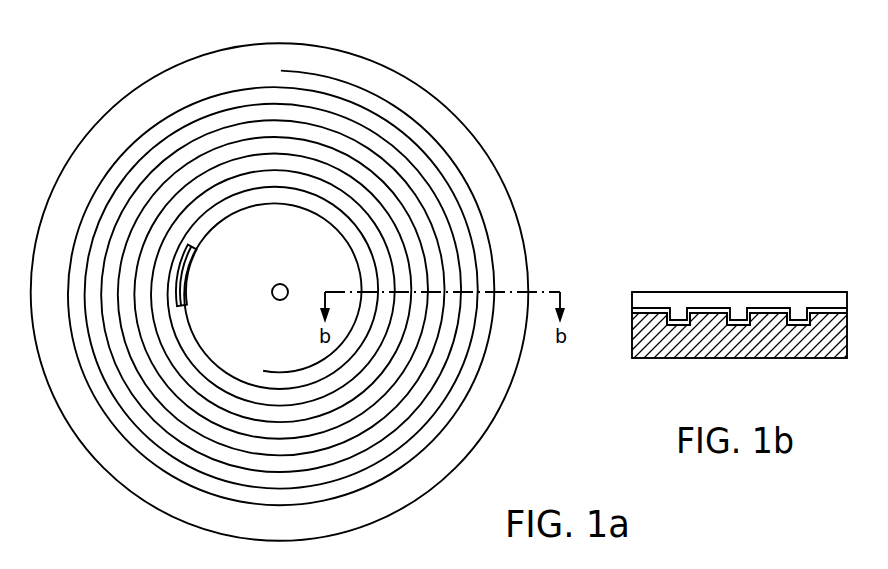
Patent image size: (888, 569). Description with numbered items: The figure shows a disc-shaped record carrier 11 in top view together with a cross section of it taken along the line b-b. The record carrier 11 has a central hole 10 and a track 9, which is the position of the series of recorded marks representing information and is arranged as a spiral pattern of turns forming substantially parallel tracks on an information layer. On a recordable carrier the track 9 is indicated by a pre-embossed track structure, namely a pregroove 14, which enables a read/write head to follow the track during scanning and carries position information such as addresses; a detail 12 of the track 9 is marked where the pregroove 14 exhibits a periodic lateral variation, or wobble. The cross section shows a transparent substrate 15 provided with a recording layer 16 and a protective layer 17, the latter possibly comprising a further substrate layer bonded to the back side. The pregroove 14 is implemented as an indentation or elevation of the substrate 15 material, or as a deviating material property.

In FIG. 1a, the track 9 is at (148, 128).
In FIG. 1a, the central hole 10 is at (280, 284).
In FIG. 1a, the record carrier 11 is at (508, 131).
In FIG. 1b, the record carrier 11 is at (637, 266).
In FIG. 1a, the detail of the track 12 is at (189, 290).
In FIG. 1b, the pregroove 14 is at (742, 328).
In FIG. 1b, the substrate 15 is at (652, 353).
In FIG. 1b, the recording layer 16 is at (817, 309).
In FIG. 1b, the protective layer 17 is at (735, 298).